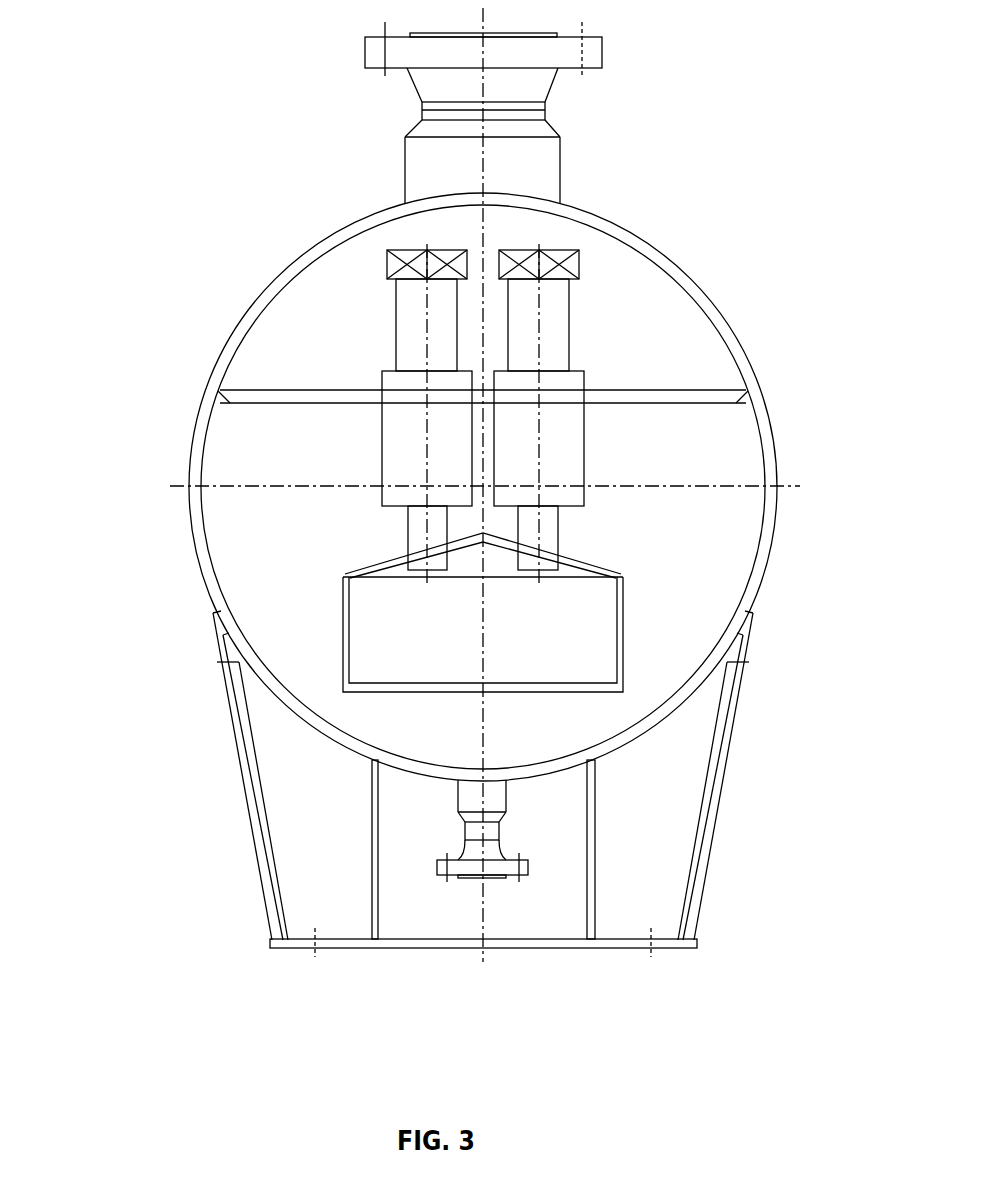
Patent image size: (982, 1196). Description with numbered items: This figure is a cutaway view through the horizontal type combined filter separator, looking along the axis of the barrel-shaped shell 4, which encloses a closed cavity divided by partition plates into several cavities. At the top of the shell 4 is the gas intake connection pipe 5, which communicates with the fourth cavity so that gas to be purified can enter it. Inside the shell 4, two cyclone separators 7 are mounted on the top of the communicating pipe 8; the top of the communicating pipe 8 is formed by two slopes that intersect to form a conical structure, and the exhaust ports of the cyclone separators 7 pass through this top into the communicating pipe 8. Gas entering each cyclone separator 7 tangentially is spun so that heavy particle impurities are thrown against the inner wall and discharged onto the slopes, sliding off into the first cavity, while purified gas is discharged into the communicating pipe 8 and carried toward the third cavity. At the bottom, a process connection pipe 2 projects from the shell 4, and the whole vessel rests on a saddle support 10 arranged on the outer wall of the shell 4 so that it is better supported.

The process connection pipe 2 is at (302, 760).
The shell 4 is at (426, 458).
The gas intake connection pipe 5 is at (339, 113).
The cyclone separator 7 is at (330, 414).
The communicating pipe 8 is at (349, 567).
The saddle support 10 is at (414, 784).